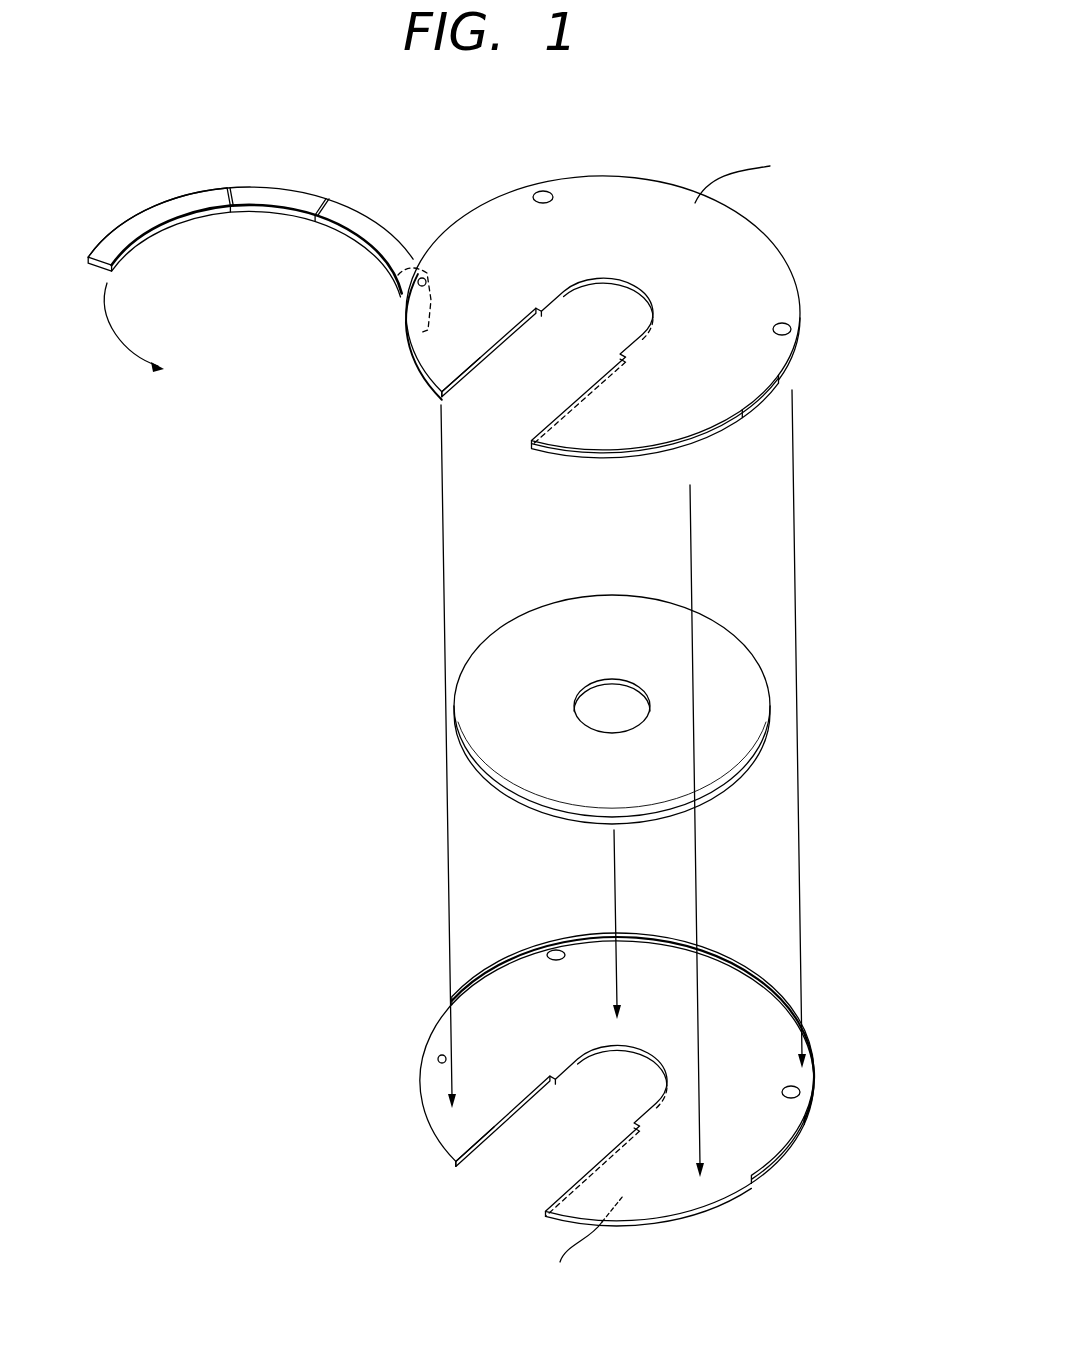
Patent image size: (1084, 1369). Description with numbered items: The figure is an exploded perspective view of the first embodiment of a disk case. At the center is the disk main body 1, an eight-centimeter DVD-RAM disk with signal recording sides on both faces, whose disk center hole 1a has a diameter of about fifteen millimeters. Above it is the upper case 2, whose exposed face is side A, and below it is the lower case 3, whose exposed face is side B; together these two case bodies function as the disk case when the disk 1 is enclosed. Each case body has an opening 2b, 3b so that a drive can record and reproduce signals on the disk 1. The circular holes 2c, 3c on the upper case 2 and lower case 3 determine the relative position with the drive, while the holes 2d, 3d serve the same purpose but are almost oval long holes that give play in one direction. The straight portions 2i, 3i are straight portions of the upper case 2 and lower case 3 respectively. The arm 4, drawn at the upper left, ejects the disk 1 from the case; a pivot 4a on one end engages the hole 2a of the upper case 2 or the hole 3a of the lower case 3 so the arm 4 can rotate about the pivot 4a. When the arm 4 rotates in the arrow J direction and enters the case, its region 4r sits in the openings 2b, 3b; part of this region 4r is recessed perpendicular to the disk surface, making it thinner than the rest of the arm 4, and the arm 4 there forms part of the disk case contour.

The disk main body 1 is at (658, 687).
The disk center hole 1a is at (628, 702).
The upper case body 2 is at (775, 227).
The hole 2a is at (423, 278).
The opening 2b is at (478, 394).
The hole 2c is at (791, 329).
The hole 2d is at (545, 191).
The straight portion 2i is at (485, 207).
The lower case body 3 is at (699, 1228).
The hole 3a is at (437, 1059).
The opening 3b is at (491, 1168).
The hole 3c is at (556, 950).
The hole 3d is at (801, 1091).
The straight portion 3i is at (483, 987).
The arm 4 is at (349, 215).
The region 4r is at (265, 193).
The pivot 4a is at (418, 284).
The arrow J direction J is at (137, 327).